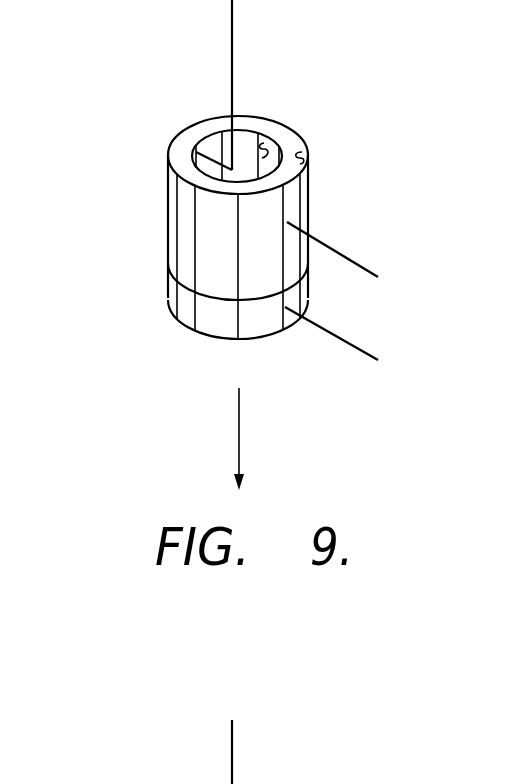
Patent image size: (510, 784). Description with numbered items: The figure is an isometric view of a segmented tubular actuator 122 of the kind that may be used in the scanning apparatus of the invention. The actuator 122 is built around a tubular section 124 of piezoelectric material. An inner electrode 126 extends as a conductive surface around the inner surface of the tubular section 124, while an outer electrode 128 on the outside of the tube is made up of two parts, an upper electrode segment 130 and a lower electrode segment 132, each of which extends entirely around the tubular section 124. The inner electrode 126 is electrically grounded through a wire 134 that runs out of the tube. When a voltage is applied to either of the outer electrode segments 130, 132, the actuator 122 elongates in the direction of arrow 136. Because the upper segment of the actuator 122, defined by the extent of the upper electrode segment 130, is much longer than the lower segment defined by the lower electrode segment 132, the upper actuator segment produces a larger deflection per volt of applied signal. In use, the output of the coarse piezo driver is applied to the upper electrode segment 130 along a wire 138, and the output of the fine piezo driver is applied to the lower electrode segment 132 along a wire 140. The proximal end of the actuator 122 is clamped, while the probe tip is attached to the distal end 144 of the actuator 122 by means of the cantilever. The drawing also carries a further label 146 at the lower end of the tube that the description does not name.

The segmented tubular actuator 122 is at (240, 234).
The tubular section 124 is at (302, 152).
The inner electrode 126 is at (262, 146).
The outer electrode 128 is at (168, 207).
The upper electrode segment 130 is at (168, 237).
The lower electrode segment 132 is at (168, 293).
The wire 134 is at (228, 62).
The arrow 136 is at (238, 428).
The wire 138 is at (332, 247).
The wire 140 is at (323, 322).
The distal end 144 is at (190, 127).
The bottom end of ferrule 146 is at (263, 337).